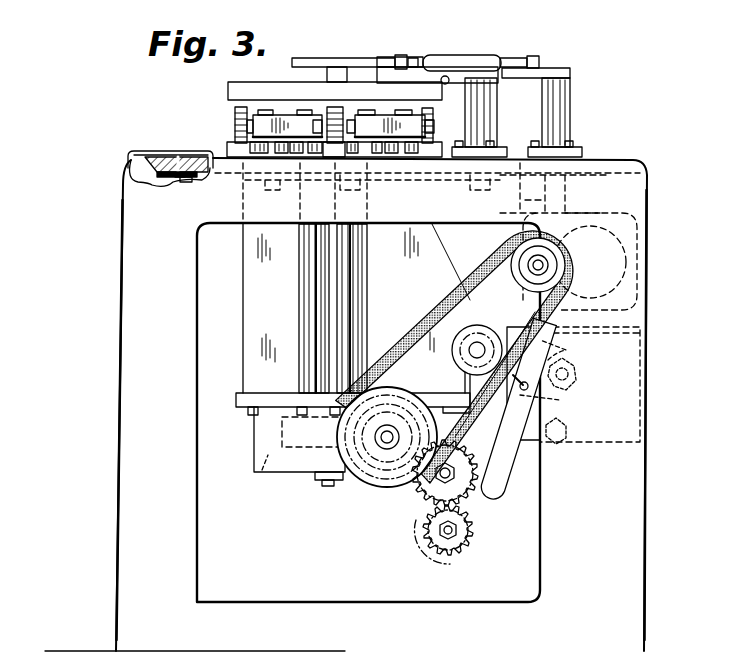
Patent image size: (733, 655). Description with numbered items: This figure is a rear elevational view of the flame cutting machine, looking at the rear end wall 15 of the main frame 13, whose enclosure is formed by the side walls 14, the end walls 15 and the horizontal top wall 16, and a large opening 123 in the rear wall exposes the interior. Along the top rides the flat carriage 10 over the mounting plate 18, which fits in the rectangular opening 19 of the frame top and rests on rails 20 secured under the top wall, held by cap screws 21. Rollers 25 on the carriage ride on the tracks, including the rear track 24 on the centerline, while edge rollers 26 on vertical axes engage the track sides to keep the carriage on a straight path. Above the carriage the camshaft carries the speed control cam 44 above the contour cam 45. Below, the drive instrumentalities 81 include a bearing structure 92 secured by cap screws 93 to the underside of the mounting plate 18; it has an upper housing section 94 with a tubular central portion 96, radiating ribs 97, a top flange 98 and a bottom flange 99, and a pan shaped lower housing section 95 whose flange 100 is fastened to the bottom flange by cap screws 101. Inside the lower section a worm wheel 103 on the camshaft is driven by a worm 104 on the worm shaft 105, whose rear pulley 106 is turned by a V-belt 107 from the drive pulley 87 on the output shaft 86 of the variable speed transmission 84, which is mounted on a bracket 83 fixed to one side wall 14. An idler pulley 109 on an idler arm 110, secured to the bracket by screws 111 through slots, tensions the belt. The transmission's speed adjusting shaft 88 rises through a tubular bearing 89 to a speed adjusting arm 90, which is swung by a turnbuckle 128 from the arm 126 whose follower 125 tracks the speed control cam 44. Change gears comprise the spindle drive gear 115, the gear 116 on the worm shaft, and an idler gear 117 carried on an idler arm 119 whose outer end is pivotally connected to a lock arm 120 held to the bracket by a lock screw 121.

The carriage 10 is at (190, 110).
The main frame 13 is at (97, 287).
The side walls 14 is at (122, 338).
The end walls 15 is at (135, 384).
The top wall 16 is at (598, 160).
The mounting plate 18 is at (205, 151).
The rectangular opening 19 is at (176, 151).
The rails 20 is at (138, 181).
The cap screws 21 is at (192, 180).
The rear track 24 is at (358, 163).
The rollers 25 is at (237, 108).
The edge rollers 26 is at (280, 158).
The speed control cam 44 is at (348, 58).
The contour cam 45 is at (242, 100).
The drive instrumentalities 81 is at (318, 532).
The bracket 83 is at (640, 320).
The variable speed transmission 84 is at (625, 246).
The output shaft 86 is at (542, 265).
The drive pulley 87 is at (519, 258).
The speed adjusting shaft 88 is at (570, 193).
The tubular bearing 89 is at (570, 100).
The speed adjusting arm 90 is at (541, 69).
The bearing structure 92 is at (227, 326).
The cap screws 93 is at (250, 195).
The upper housing section 94 is at (305, 262).
The lower housing section 95 is at (254, 445).
The central portion 96 is at (355, 298).
The ribs 97 is at (440, 283).
The top flange 98 is at (330, 160).
The bottom flange 99 is at (255, 393).
The flange 100 is at (250, 396).
The cap screws 101 is at (246, 416).
The worm wheel 103 is at (262, 472).
The worm 104 is at (418, 406).
The worm shaft 105 is at (380, 448).
The pulley 106 is at (325, 473).
The V-belt 107 is at (425, 352).
The idler pulley 109 is at (479, 340).
The idler arm 110 is at (535, 372).
The screws 111 is at (578, 412).
The spindle drive gear 115 is at (455, 546).
The gear 116 is at (378, 470).
The idler gear 117 is at (445, 502).
The idler arm 119 is at (430, 492).
The lock arm 120 is at (522, 456).
The lock screw 121 is at (575, 378).
The large opening 123 is at (205, 545).
The follower 125 is at (387, 57).
The arm 126 is at (448, 78).
The turnbuckle 128 is at (478, 64).